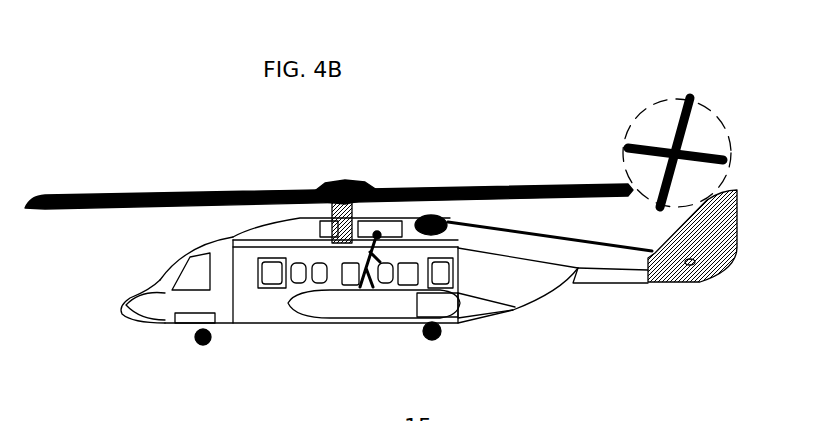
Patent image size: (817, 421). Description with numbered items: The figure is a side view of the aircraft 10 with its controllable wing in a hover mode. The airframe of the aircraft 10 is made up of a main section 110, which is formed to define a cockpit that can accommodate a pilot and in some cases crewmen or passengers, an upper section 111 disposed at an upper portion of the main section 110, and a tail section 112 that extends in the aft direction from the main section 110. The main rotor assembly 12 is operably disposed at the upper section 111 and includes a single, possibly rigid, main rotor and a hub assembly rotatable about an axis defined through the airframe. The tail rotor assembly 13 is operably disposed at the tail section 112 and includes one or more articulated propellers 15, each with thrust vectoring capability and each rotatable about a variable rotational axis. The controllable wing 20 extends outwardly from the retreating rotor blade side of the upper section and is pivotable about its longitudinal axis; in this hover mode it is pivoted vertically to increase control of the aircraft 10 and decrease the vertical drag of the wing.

The aircraft 10 is at (153, 276).
The main rotor assembly 12 is at (352, 200).
The tail rotor assembly 13 is at (688, 160).
The articulated propeller 15 is at (680, 140).
The controllable wing 20 is at (375, 260).
The main section 110 is at (337, 282).
The upper section 111 is at (305, 228).
The tail section 112 is at (618, 268).